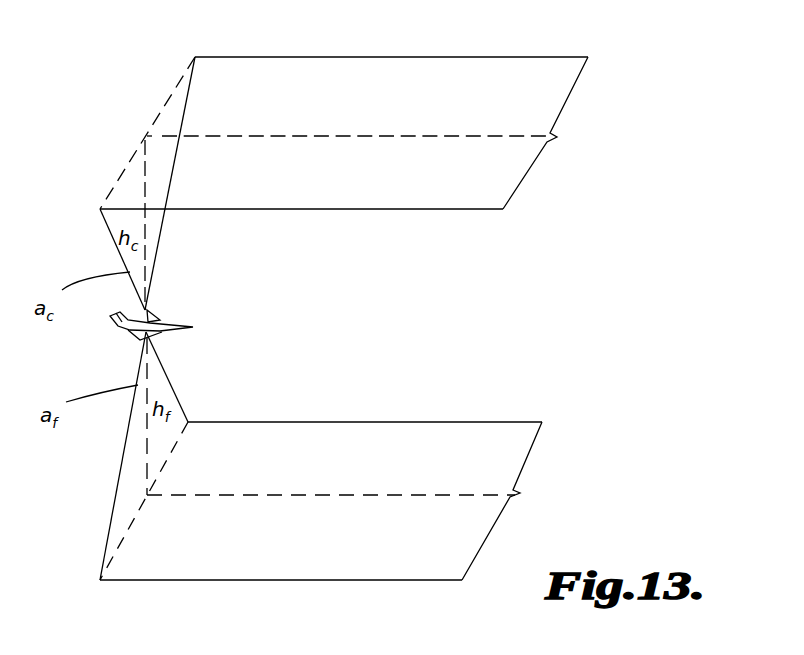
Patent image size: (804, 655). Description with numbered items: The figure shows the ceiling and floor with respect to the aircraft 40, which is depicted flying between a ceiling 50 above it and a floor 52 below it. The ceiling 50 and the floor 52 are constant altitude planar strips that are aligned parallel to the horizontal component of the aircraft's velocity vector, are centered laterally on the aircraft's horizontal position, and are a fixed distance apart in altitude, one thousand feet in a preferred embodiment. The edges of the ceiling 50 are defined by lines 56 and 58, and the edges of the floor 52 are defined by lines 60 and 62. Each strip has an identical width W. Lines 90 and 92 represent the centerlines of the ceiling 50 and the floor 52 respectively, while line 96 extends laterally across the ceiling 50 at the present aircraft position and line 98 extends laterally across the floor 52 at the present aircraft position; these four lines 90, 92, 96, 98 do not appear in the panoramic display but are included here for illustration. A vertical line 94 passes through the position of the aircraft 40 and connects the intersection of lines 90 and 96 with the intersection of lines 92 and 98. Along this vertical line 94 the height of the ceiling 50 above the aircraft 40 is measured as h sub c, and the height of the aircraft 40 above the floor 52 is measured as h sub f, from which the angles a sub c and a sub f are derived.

The aircraft 40 is at (125, 332).
The ceiling 50 is at (319, 160).
The floor 52 is at (293, 473).
The line 56 is at (404, 226).
The line 58 is at (368, 57).
The line 60 is at (368, 582).
The line 62 is at (440, 422).
The line 90 is at (270, 136).
The line 92 is at (327, 440).
The vertical line 94 is at (147, 180).
The line 96 is at (158, 110).
The line 98 is at (122, 540).